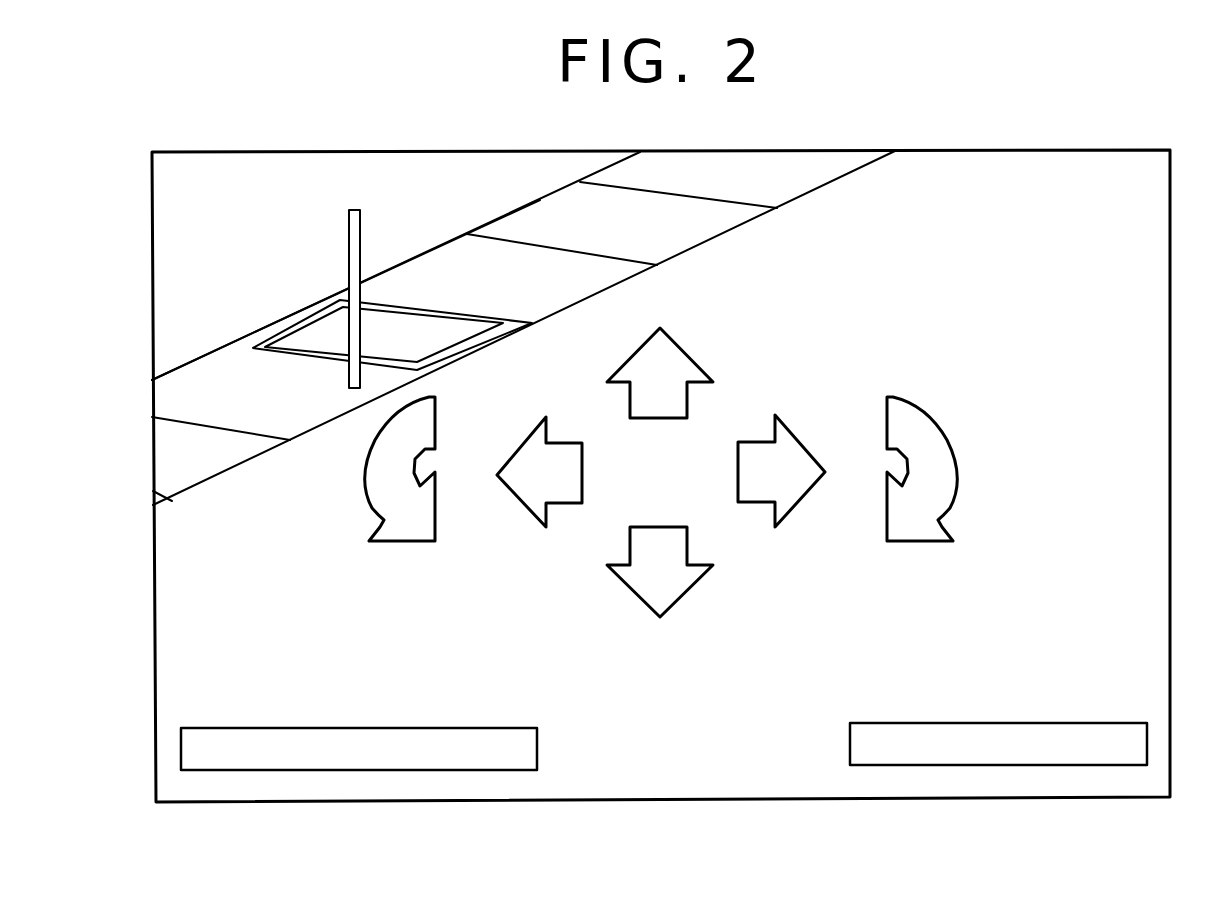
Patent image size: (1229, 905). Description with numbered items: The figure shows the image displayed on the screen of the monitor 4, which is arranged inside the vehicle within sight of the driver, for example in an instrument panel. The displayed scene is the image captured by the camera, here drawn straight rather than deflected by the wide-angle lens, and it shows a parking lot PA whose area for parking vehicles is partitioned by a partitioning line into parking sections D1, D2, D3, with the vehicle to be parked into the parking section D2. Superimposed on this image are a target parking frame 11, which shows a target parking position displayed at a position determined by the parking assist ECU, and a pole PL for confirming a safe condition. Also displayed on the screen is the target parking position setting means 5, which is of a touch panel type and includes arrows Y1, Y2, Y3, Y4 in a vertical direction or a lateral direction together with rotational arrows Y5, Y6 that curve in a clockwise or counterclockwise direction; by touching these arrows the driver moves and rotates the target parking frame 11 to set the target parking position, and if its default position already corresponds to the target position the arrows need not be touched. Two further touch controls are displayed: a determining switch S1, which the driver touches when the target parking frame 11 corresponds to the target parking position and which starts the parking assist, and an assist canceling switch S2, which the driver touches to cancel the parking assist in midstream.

The monitor 4 is at (1172, 492).
The target parking position setting means 5 is at (918, 348).
The target parking frame 11 is at (483, 338).
The parking lot PA is at (712, 260).
The pole PL is at (348, 237).
The parking section D1 is at (437, 247).
The parking section D2 is at (296, 322).
The parking section D3 is at (203, 357).
The arrow Y1 is at (690, 352).
The arrow Y2 is at (683, 590).
The arrow Y3 is at (520, 503).
The arrow Y4 is at (798, 498).
The rotational arrow Y5 is at (362, 475).
The rotational arrow Y6 is at (960, 472).
The determining switch S1 is at (1088, 765).
The assist canceling switch S2 is at (485, 770).